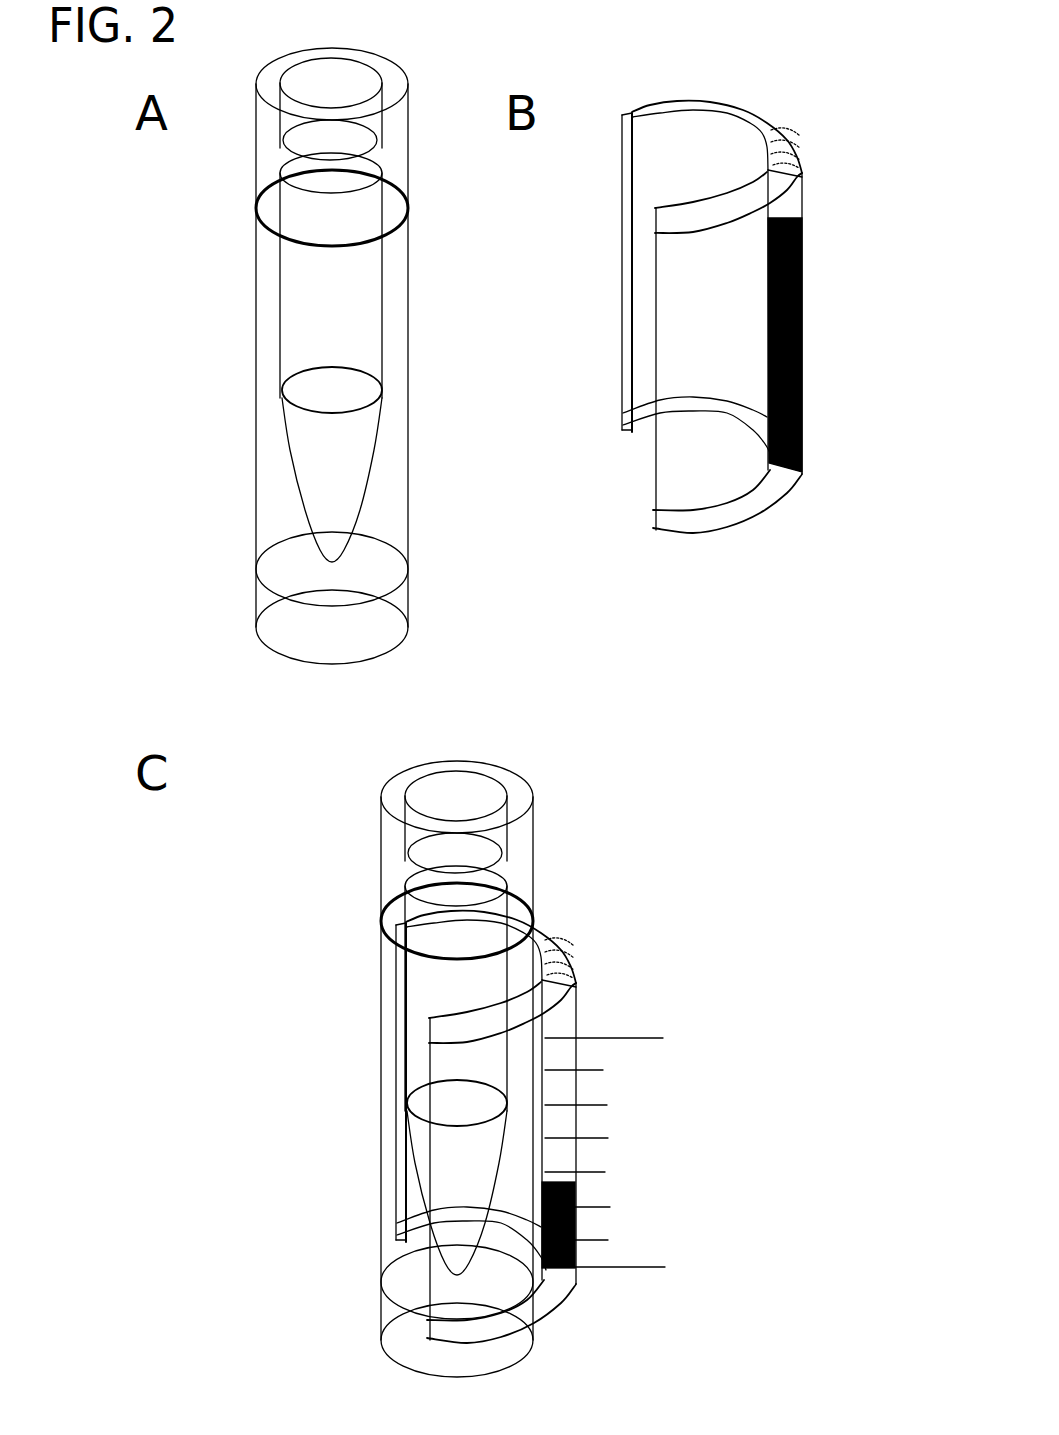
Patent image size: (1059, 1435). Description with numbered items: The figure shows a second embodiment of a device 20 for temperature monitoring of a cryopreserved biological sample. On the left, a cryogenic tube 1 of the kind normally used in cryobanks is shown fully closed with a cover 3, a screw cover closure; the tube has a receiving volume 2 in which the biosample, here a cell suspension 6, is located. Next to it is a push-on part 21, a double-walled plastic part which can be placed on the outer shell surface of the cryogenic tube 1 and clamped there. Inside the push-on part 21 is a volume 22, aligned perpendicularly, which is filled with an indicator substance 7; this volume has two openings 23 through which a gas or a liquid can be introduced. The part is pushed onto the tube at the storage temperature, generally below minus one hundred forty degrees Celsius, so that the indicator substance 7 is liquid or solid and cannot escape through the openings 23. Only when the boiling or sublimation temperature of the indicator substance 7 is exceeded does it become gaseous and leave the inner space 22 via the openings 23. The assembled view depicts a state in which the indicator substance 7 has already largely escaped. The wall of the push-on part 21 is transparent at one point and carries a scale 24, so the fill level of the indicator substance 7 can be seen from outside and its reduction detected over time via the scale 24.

In FIG. 2A, the cryogenic tube 1 is at (292, 318).
In FIG. 2C, the cryogenic tube 1 is at (385, 1030).
In FIG. 2A, the receiving volume 2 is at (335, 278).
In FIG. 2C, the receiving volume 2 is at (430, 992).
In FIG. 2A, the cover 3 is at (292, 136).
In FIG. 2C, the cover 3 is at (390, 848).
In FIG. 2A, the cell suspension 6 is at (345, 452).
In FIG. 2C, the cell suspension 6 is at (440, 1165).
In FIG. 2B, the indicator substance 7 is at (804, 370).
In FIG. 2C, the indicator substance 7 is at (577, 1215).
In FIG. 2C, the device 20 is at (545, 1067).
In FIG. 2B, the push-on part 21 is at (680, 147).
In FIG. 2C, the push-on part 21 is at (545, 945).
In FIG. 2B, the volume 22 is at (772, 132).
In FIG. 2B, the openings 23 is at (798, 161).
In FIG. 2C, the openings 23 is at (569, 977).
In FIG. 2C, the scale 24 is at (545, 1038).